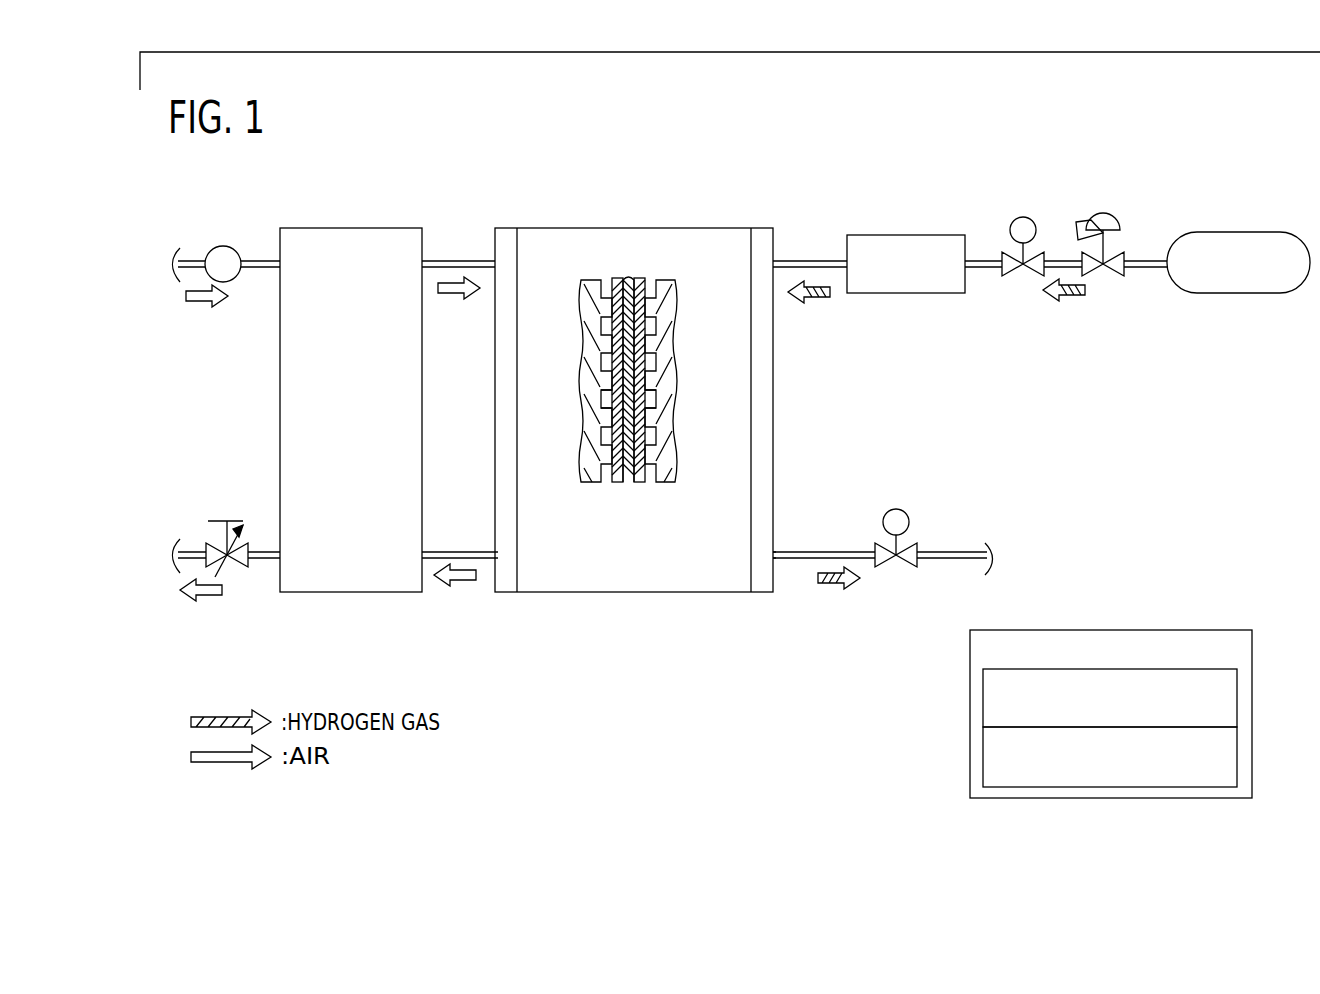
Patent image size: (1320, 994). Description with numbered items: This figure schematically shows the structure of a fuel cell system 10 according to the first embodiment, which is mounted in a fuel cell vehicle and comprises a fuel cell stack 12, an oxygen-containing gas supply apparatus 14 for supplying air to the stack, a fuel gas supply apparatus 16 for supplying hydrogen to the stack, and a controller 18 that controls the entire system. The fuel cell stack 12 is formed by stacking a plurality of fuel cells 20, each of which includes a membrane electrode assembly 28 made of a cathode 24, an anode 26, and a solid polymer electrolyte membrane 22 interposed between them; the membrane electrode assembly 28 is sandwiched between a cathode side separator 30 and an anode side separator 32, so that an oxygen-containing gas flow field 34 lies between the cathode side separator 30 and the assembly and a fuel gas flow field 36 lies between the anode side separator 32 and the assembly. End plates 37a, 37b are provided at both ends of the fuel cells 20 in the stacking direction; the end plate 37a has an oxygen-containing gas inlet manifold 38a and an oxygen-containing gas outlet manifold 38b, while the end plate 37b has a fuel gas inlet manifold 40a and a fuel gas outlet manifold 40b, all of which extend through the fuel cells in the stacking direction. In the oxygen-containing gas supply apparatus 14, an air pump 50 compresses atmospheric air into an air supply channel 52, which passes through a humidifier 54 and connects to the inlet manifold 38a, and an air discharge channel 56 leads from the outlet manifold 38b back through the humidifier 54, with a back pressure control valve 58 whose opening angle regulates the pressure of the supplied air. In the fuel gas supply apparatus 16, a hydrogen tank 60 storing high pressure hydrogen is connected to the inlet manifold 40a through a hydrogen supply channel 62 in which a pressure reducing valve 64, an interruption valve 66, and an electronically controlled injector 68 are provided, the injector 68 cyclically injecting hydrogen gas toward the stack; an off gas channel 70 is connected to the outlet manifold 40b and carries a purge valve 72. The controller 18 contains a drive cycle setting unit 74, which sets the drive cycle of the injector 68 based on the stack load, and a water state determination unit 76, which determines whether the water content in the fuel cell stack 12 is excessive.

The fuel cell system 10 is at (367, 153).
The fuel cell stack 12 is at (735, 203).
The oxygen-containing gas supply apparatus 14 is at (278, 212).
The fuel gas supply apparatus 16 is at (1158, 215).
The controller 18 is at (1167, 624).
The fuel cell 20 is at (558, 185).
The solid polymer electrolyte membrane 22 is at (626, 482).
The cathode 24 is at (615, 482).
The anode 26 is at (642, 482).
The membrane electrode assembly 28 is at (639, 271).
The cathode side separator 30 is at (598, 271).
The anode side separator 32 is at (672, 270).
The oxygen-containing gas flow field 34 is at (604, 402).
The fuel gas flow field 36 is at (650, 400).
The end plate 37a is at (495, 462).
The end plate 37b is at (774, 462).
The oxygen-containing gas inlet manifold 38a is at (494, 262).
The oxygen-containing gas outlet manifold 38b is at (494, 562).
The fuel gas inlet manifold 40a is at (777, 260).
The fuel gas outlet manifold 40b is at (775, 562).
The air pump 50 is at (223, 246).
The air supply channel 52 is at (251, 271).
The humidifier 54 is at (380, 232).
The air discharge channel 56 is at (450, 552).
The back pressure control valve 58 is at (239, 570).
The hydrogen tank 60 is at (1246, 232).
The hydrogen supply channel 62 is at (988, 270).
The pressure reducing valve 64 is at (1092, 213).
The interruption valve 66 is at (1023, 217).
The injector 68 is at (917, 233).
The off gas channel 70 is at (812, 552).
The purge valve 72 is at (886, 509).
The drive cycle setting unit 74 is at (983, 697).
The water state determination unit 76 is at (983, 757).